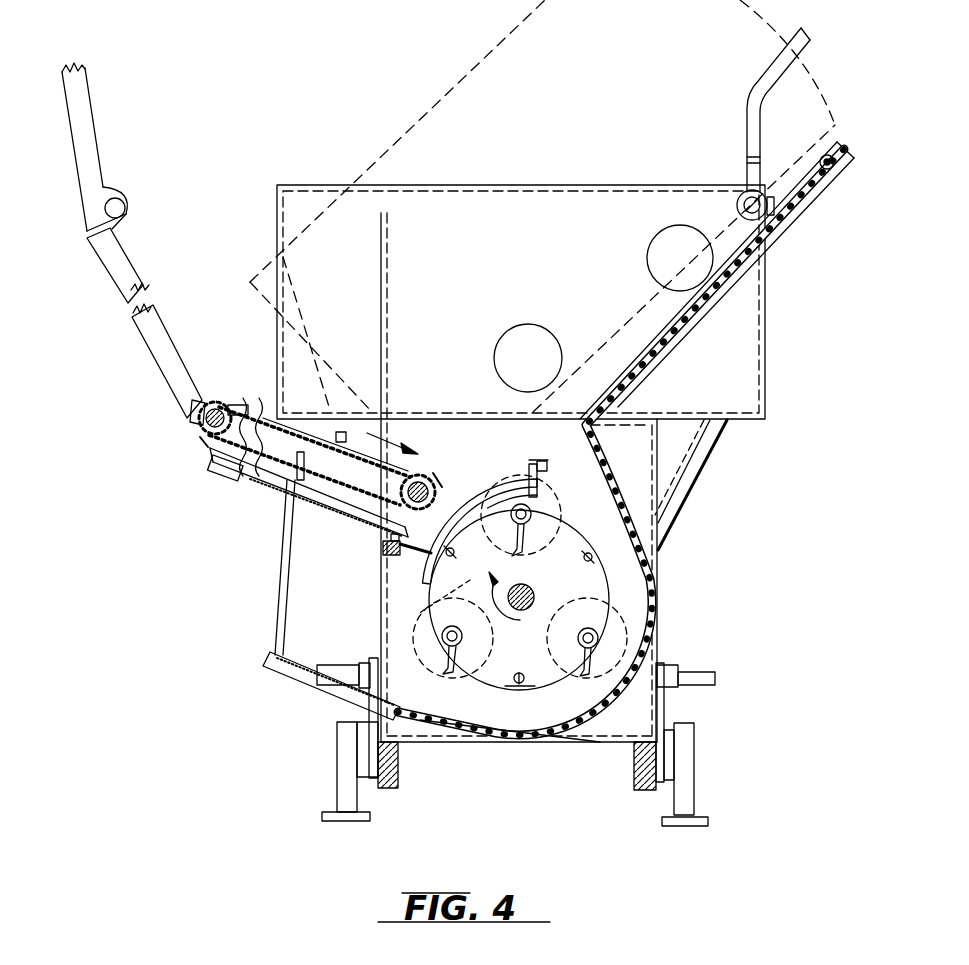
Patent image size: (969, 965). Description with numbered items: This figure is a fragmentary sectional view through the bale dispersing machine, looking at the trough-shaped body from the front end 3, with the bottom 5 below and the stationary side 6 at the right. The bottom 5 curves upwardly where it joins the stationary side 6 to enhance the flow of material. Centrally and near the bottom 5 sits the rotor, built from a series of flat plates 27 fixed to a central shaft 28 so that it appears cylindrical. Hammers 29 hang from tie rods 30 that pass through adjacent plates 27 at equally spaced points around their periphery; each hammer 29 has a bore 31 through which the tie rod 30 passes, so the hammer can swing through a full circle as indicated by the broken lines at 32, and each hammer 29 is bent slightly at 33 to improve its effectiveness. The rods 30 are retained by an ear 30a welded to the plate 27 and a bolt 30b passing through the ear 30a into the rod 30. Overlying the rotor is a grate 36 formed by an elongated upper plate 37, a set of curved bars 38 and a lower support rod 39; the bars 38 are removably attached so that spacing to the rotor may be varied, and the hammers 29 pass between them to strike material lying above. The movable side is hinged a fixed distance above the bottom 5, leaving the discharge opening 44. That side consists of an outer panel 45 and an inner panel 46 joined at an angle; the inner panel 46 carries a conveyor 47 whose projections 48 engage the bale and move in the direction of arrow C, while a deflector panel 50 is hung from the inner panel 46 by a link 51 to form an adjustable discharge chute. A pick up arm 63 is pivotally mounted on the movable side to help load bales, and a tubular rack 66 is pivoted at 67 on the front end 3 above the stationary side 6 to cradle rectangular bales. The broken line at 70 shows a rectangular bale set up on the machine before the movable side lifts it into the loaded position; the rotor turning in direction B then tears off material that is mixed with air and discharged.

The front end 3 is at (560, 193).
The bottom 5 is at (487, 740).
The stationary side 6 is at (808, 186).
The flat plates 27 is at (605, 578).
The central shaft 28 is at (529, 589).
The hammers 29 is at (449, 672).
The tie rods 30 is at (441, 646).
The ear 30a is at (514, 688).
The bolt 30b is at (528, 712).
The bore 31 is at (442, 635).
The broken lines indicating hammer movement 32 is at (459, 586).
The bend of hammer 33 is at (600, 664).
The grate 36 is at (480, 489).
The upper plate 37 is at (560, 440).
The bars 38 is at (504, 485).
The lower support rod 39 is at (383, 548).
The opening 44 is at (372, 622).
The outer panel 45 is at (147, 344).
The inner panel 46 is at (267, 487).
The conveyor 47 is at (272, 414).
The projections 48 is at (341, 428).
The deflector panel 50 is at (300, 672).
The link 51 is at (288, 576).
The pick up arm 63 is at (82, 97).
The rack 66 is at (762, 75).
The pivotal attachment 67 is at (742, 202).
The broken line showing bale set-up position 70 is at (547, 38).